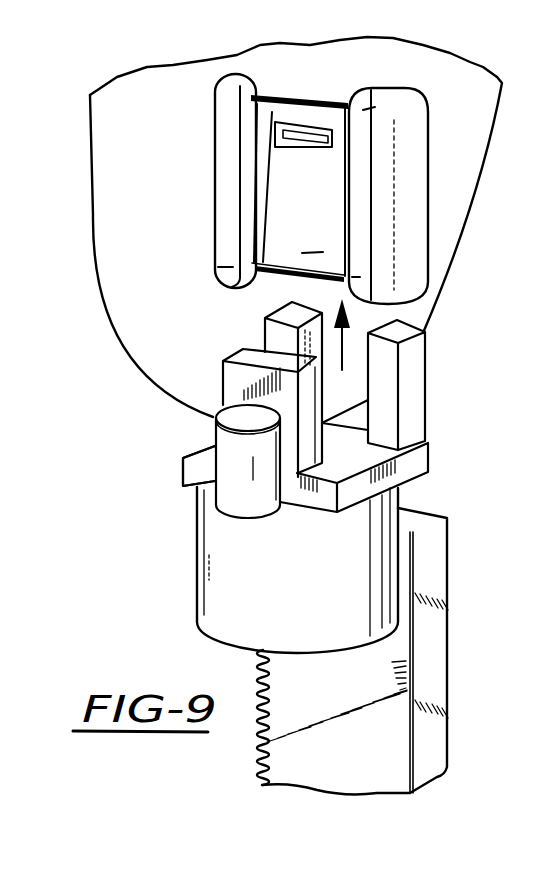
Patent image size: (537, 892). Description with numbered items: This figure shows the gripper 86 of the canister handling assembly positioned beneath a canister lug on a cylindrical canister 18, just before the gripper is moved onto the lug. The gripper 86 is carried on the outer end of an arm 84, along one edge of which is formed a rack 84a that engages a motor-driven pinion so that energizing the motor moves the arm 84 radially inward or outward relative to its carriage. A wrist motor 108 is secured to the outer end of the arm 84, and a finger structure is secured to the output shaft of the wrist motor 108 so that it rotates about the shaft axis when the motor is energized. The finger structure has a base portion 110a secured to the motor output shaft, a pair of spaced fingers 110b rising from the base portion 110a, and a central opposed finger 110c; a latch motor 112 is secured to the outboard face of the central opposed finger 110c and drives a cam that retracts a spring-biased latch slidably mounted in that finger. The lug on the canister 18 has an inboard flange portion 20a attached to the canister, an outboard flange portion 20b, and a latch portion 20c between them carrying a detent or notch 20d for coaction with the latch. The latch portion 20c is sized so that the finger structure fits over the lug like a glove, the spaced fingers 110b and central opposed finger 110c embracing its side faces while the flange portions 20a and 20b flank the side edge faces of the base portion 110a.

The cylindrical canister 18 is at (160, 203).
The inboard flange portion 20a is at (226, 76).
The outboard flange portion 20b is at (396, 89).
The latch portion 20c is at (333, 102).
The detent or notch 20d is at (308, 141).
The arm 84 is at (437, 620).
The rack 84a is at (258, 743).
The gripper 86 is at (172, 465).
The wrist motor 108 is at (288, 603).
The base portion 110a is at (389, 468).
The spaced fingers 110b is at (278, 331).
The central opposed finger 110c is at (237, 388).
The latch motor 112 is at (203, 478).